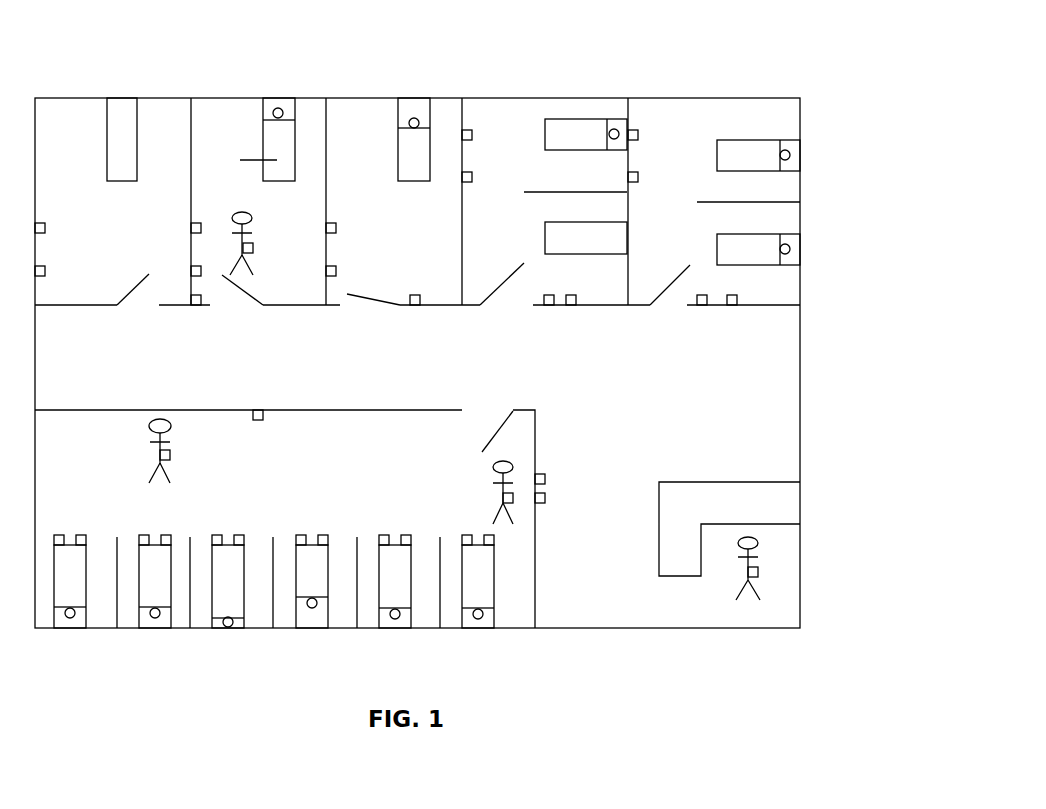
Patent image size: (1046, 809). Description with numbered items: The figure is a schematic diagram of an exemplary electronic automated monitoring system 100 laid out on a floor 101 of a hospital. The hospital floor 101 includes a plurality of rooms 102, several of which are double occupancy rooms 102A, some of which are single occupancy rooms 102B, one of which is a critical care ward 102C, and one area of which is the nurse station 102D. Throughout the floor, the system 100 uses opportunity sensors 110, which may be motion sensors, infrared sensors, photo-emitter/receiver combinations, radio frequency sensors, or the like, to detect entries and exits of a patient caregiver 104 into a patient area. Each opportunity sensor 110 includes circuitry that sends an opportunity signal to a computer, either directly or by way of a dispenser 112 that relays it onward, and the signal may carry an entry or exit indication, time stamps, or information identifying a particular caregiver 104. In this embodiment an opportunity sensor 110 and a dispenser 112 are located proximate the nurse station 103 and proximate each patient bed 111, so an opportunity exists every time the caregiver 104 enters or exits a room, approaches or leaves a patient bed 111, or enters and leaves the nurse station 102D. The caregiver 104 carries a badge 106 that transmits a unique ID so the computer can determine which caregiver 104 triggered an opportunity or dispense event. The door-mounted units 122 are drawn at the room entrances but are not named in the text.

The electronic automated monitoring system 100 is at (660, 56).
The hospital floor 101 is at (678, 628).
The rooms 102 is at (77, 190).
The double occupancy rooms 102A is at (530, 243).
The single occupancy rooms 102B is at (447, 255).
The critical care ward 102C is at (290, 473).
The nurse station 102D is at (635, 451).
The nurse station 103 is at (659, 535).
The caregiver 104 is at (253, 233).
The badge 106 is at (253, 250).
The opportunity sensor 110 is at (45, 271).
The patient bed 111 is at (553, 597).
The dispenser 112 is at (45, 228).
The door sensor 122 is at (199, 306).